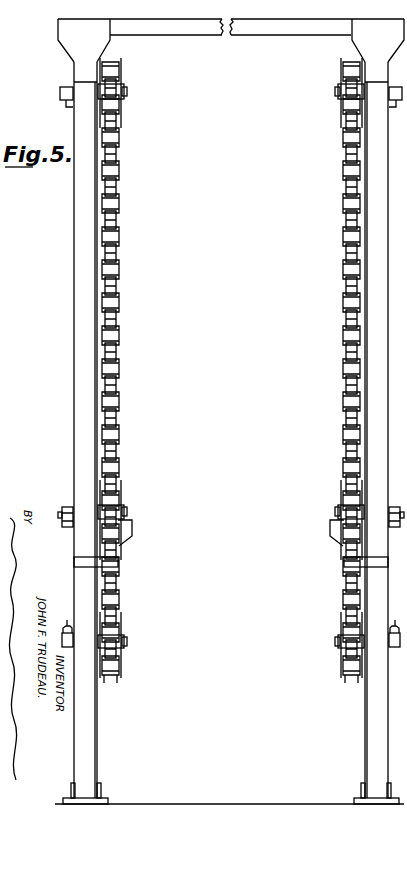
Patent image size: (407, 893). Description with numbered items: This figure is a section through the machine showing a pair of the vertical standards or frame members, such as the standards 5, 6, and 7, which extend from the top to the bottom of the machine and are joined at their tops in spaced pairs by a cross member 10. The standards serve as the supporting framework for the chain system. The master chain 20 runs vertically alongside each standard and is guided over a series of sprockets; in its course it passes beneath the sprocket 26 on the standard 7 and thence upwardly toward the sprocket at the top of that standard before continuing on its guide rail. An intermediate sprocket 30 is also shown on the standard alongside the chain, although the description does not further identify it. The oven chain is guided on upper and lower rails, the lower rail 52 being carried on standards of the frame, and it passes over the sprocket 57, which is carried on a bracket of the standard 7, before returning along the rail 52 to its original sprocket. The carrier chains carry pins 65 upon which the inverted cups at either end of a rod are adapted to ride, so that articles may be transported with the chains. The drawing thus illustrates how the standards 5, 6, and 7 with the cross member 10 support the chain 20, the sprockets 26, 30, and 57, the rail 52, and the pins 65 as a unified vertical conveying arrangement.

The vertical standard 5 is at (231, 603).
The vertical standard 6 is at (232, 110).
The vertical standard 7 is at (78, 187).
The cross member 10 is at (276, 32).
The master chain 20 is at (118, 245).
The sprocket 26 is at (120, 636).
The intermediate sprocket 30 is at (120, 484).
The lower rail 52 is at (118, 545).
The sprocket 57 is at (120, 497).
The pin 65 is at (121, 60).